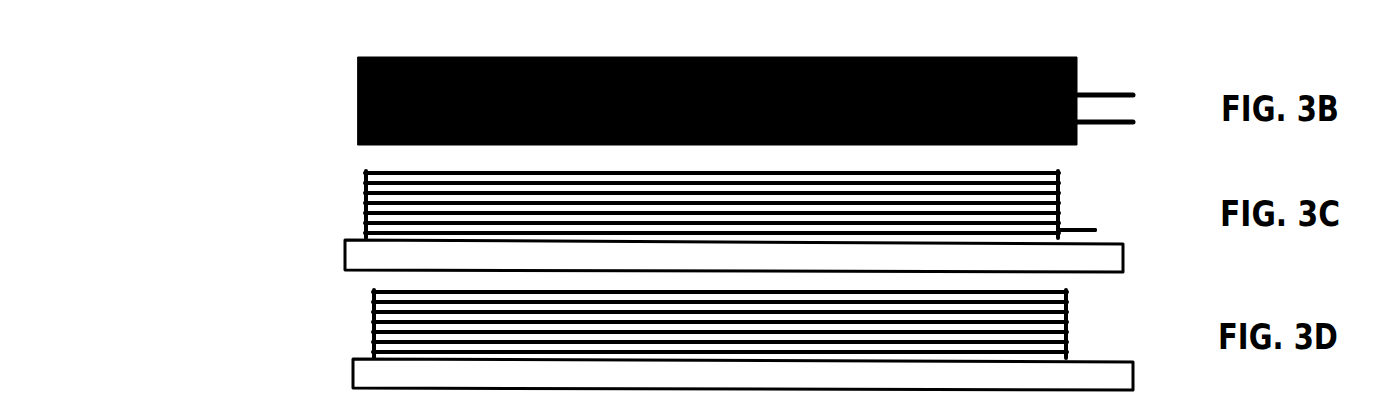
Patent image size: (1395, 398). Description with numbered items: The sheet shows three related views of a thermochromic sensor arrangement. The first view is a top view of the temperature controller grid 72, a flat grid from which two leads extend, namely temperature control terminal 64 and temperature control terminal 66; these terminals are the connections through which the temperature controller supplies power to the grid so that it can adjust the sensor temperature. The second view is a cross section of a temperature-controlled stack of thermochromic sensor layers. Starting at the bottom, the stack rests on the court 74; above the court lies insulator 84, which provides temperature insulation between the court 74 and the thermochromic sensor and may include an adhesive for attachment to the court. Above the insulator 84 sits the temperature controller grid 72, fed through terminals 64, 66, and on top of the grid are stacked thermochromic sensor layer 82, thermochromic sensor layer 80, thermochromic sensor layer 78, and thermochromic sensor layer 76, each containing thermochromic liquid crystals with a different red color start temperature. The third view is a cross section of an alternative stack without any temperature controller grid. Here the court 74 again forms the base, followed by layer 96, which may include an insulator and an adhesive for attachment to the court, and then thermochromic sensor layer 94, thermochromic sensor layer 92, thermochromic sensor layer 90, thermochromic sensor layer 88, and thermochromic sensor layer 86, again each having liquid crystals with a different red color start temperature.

In FIG. 3B, the temperature control terminal 64 is at (1102, 124).
In FIG. 3C, the temperature control terminal 64 is at (1080, 230).
In FIG. 3B, the temperature control terminal 66 is at (1097, 92).
In FIG. 3B, the temperature controller grid 72 is at (760, 57).
In FIG. 3C, the temperature controller grid 72 is at (362, 223).
In FIG. 3C, the court 74 is at (1110, 258).
In FIG. 3D, the court 74 is at (1103, 372).
In FIG. 3C, the thermochromic sensor layer 76 is at (362, 188).
In FIG. 3C, the thermochromic sensor layer 78 is at (362, 180).
In FIG. 3C, the thermochromic sensor layer 80 is at (362, 198).
In FIG. 3C, the thermochromic sensor layer 82 is at (362, 213).
In FIG. 3C, the insulator 84 is at (360, 235).
In FIG. 3D, the thermochromic sensor layer 86 is at (385, 297).
In FIG. 3D, the thermochromic sensor layer 88 is at (370, 310).
In FIG. 3D, the thermochromic sensor layer 90 is at (370, 320).
In FIG. 3D, the thermochromic sensor layer 92 is at (370, 333).
In FIG. 3D, the thermochromic sensor layer 94 is at (370, 343).
In FIG. 3D, the layer 96 is at (370, 352).